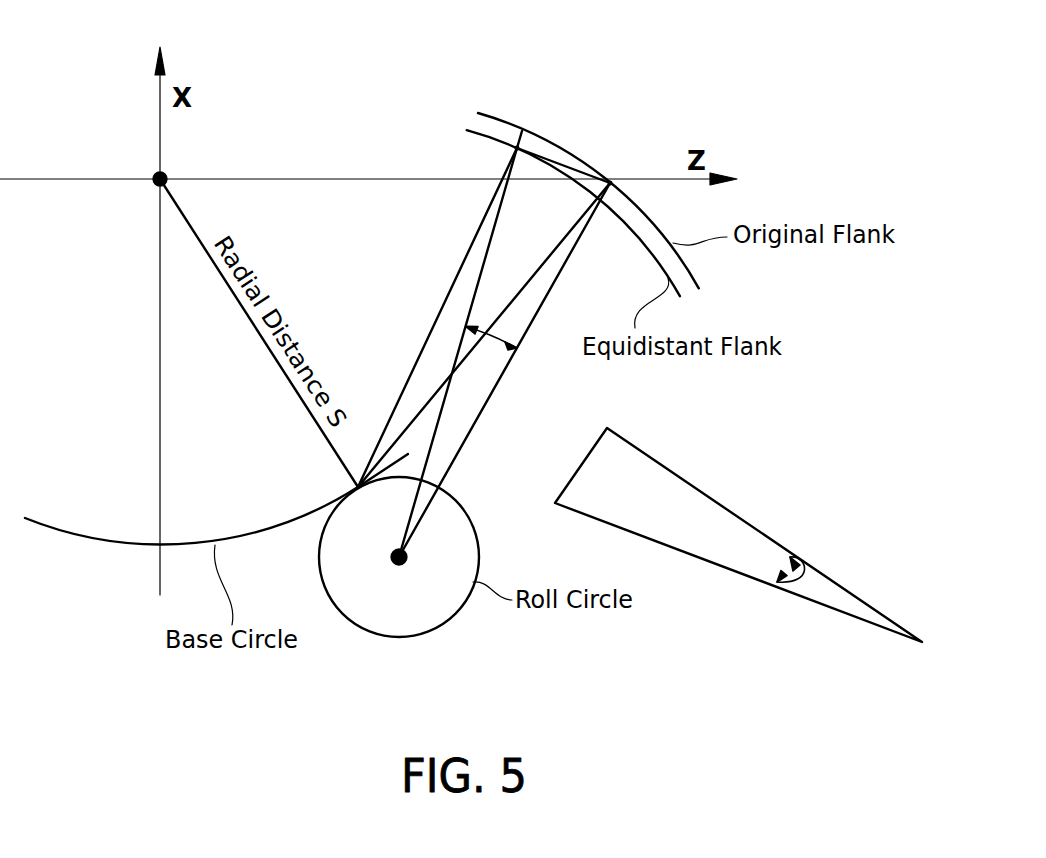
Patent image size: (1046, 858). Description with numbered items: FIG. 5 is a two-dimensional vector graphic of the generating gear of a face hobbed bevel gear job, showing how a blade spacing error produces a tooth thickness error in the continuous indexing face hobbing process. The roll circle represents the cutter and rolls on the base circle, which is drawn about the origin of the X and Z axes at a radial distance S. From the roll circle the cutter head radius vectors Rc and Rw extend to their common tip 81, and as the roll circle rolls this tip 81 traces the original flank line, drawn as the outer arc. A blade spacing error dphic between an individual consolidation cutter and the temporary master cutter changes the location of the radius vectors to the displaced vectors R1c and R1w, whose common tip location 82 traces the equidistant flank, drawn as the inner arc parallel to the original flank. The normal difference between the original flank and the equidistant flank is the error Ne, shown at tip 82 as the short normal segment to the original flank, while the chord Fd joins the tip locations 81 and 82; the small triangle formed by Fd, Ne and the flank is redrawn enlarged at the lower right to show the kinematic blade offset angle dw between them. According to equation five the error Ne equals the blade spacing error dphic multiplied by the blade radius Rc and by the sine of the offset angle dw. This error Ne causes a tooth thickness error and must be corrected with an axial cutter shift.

The tip of cutter head radius vectors Rc and Rw 81 is at (519, 320).
The common tip location of radius vectors Rc' and Rw' 82 is at (446, 305).
The cutter head radius vector Rc is at (476, 424).
The cutter head radius vector Rw is at (549, 257).
The displaced radius vector Rw' R1w is at (442, 307).
The displaced radius vector Rc' R1c is at (475, 292).
The tooth thickness error Ne is at (521, 131).
The flank deviation segment Fd is at (562, 163).
The blade spacing error Δφc dphic is at (490, 344).
The kinematic blade offset angle δw dw is at (810, 571).